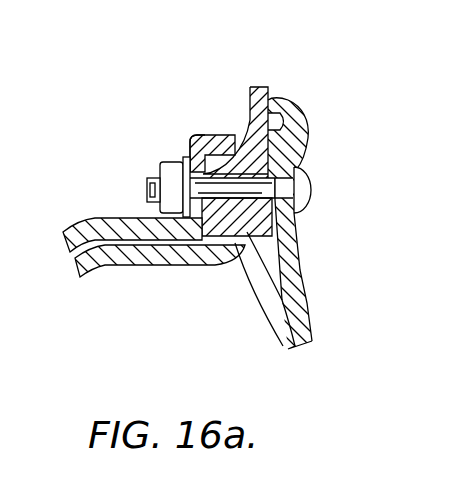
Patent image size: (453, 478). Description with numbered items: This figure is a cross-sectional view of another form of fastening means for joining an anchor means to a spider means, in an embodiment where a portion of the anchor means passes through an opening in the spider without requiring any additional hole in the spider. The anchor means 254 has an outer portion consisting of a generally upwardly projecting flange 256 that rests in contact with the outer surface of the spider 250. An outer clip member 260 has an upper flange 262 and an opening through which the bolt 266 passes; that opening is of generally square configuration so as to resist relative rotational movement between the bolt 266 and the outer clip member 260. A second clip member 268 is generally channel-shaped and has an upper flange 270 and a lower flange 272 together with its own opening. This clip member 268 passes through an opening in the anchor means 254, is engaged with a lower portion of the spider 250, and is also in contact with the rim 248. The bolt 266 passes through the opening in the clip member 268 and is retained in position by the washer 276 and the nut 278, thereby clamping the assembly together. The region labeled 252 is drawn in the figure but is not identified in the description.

The rim 248 is at (282, 328).
The spider 250 is at (250, 98).
The web 252 is at (262, 266).
The anchor means 254 is at (73, 227).
The upwardly projecting flange 256 is at (300, 135).
The outer clip member 260 is at (298, 253).
The upper flange 262 is at (283, 98).
The bolt 266 is at (300, 188).
The clip member 268 is at (188, 148).
The upper flange 270 is at (212, 138).
The lower flange 272 is at (214, 234).
The washer 276 is at (185, 215).
The nut 278 is at (162, 168).